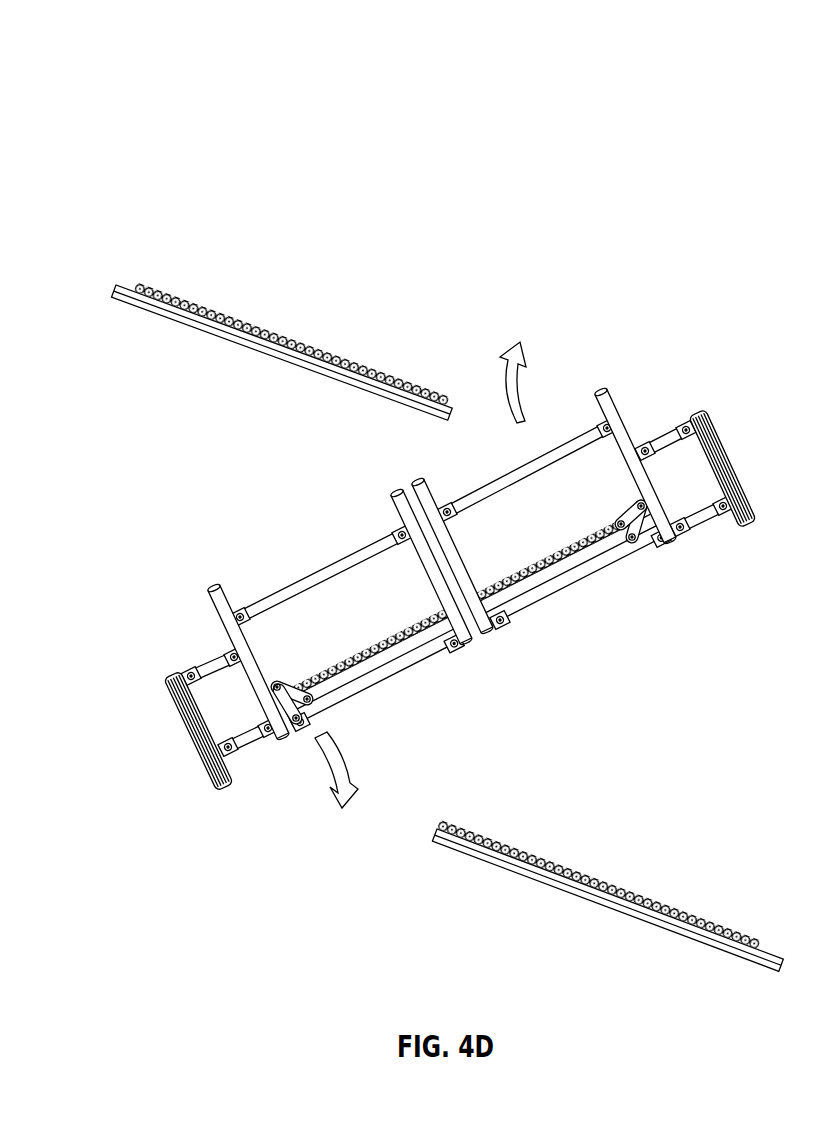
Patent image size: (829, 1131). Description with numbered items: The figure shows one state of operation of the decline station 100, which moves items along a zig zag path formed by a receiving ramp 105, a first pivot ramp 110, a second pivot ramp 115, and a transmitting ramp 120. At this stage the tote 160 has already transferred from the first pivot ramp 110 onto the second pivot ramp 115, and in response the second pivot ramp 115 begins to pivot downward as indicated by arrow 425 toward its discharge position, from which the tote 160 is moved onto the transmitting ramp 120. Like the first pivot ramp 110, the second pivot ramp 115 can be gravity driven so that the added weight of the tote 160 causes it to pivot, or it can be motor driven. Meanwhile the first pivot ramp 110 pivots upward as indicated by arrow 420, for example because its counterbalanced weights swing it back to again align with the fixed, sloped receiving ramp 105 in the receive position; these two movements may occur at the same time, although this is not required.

The decline station 100 is at (120, 71).
The receiving ramp 105 is at (280, 362).
The first pivot ramp 110 is at (460, 600).
The second pivot ramp 115 is at (252, 749).
The transmitting ramp 120 is at (655, 928).
The tote 160 is at (335, 607).
The arrow 420 is at (506, 374).
The arrow 425 is at (350, 762).